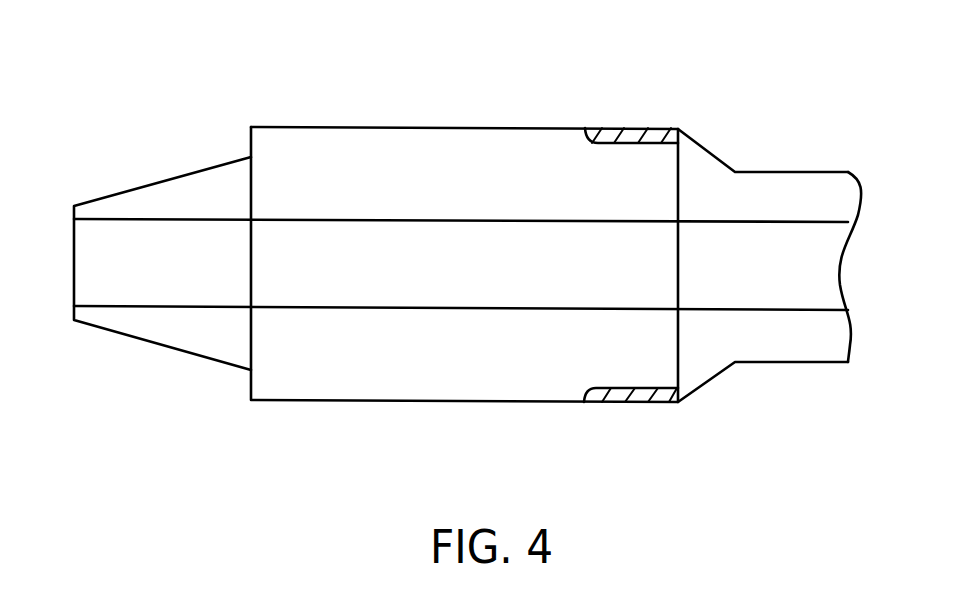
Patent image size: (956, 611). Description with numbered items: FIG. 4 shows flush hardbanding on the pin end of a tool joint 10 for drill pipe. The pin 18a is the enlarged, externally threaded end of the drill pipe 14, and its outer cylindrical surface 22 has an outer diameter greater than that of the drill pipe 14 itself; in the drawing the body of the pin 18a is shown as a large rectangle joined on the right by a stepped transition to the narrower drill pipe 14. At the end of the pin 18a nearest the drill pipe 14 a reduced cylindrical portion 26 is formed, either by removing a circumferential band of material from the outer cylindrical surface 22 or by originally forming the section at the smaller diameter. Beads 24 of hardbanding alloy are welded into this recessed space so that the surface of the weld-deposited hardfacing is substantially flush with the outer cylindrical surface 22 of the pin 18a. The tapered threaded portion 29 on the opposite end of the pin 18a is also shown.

The tool joint 10 is at (332, 106).
The drill pipe 14 is at (780, 172).
The pin 18a is at (545, 128).
The outer cylindrical surface 22 is at (428, 127).
The beads of hardbanding alloy 24 is at (647, 132).
The reduced cylindrical portion 26 is at (640, 143).
The tapered end portion 29 is at (166, 178).